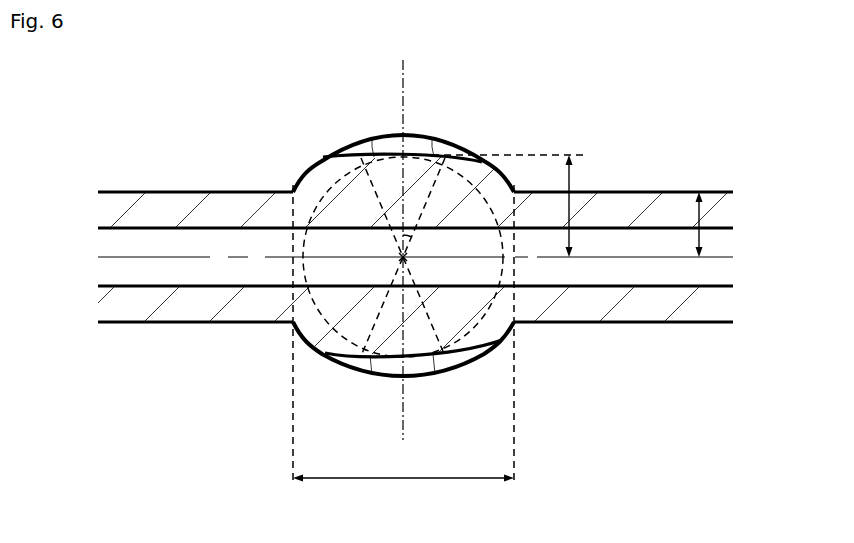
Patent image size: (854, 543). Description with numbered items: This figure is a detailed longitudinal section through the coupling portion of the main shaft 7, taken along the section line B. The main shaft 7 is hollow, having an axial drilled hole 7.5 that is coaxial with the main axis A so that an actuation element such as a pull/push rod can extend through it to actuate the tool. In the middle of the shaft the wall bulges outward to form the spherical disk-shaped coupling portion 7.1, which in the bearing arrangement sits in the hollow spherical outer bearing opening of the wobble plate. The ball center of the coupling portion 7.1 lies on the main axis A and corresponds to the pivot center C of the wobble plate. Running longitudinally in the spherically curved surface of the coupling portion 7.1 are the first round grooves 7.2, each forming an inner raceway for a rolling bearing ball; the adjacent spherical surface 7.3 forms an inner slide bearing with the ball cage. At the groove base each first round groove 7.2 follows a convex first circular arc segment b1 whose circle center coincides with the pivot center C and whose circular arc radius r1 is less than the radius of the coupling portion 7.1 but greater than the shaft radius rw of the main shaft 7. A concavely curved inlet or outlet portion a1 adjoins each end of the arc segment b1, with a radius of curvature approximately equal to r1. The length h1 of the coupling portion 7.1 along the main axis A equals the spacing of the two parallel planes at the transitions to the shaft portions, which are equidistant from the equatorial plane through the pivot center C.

The main shaft 7 is at (415, 244).
The spherical coupling portion 7.1 is at (320, 177).
The first round groove 7.2 is at (417, 143).
The surface of the spherical coupling portion 7.3 is at (503, 340).
The axial drilled hole 7.5 is at (192, 270).
The inlet or outlet portion a1 is at (342, 158).
The first circular arc segment b1 is at (384, 157).
The pivot center C is at (402, 258).
The main axis A is at (723, 257).
The circular arc radius r1 is at (576, 182).
The shaft radius rw is at (702, 221).
The length of the spherical coupling portion h1 is at (373, 478).
The section line B- B is at (396, 61).